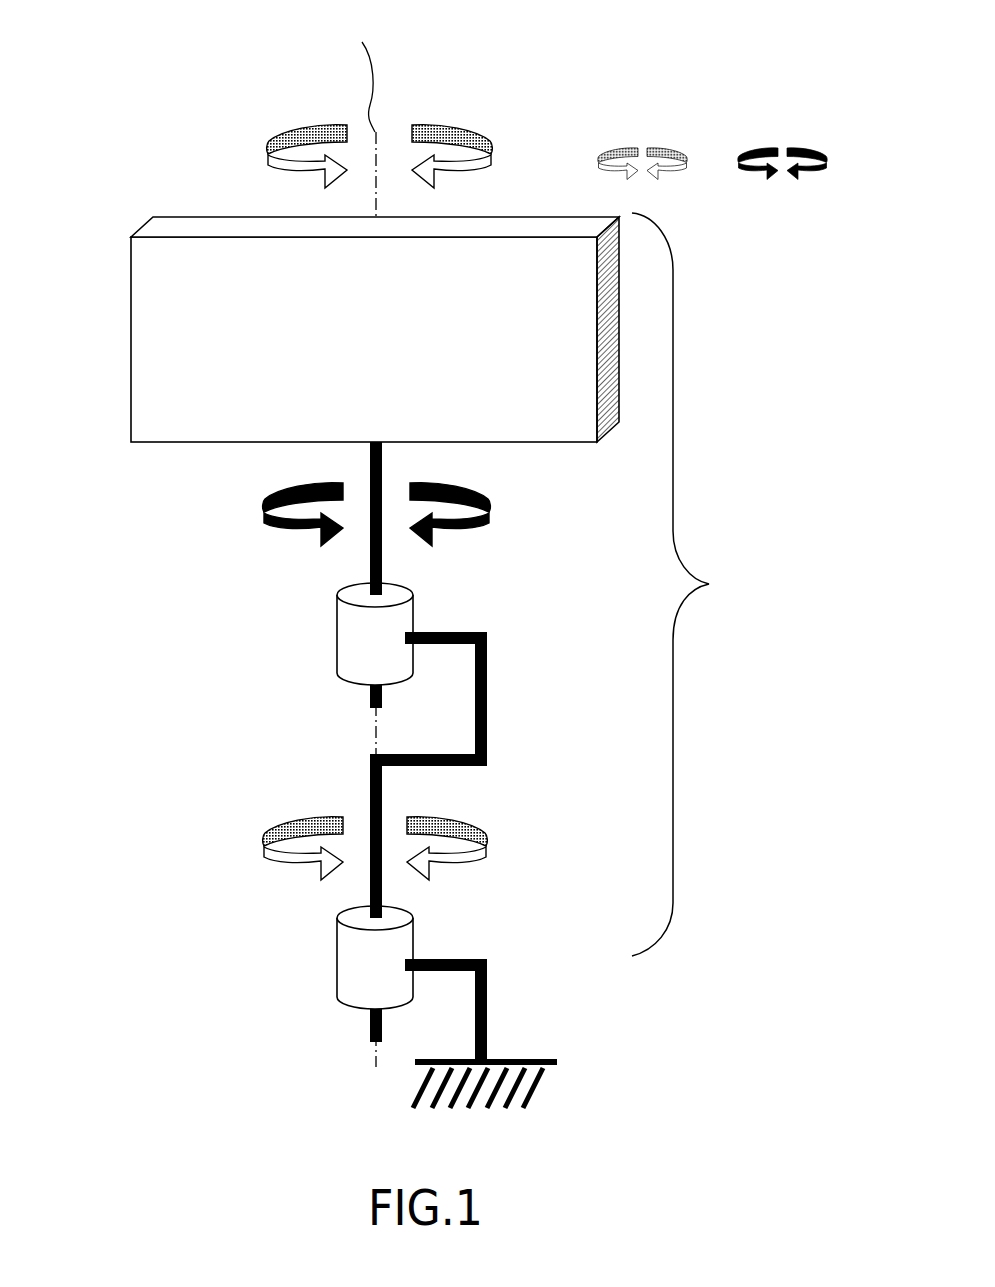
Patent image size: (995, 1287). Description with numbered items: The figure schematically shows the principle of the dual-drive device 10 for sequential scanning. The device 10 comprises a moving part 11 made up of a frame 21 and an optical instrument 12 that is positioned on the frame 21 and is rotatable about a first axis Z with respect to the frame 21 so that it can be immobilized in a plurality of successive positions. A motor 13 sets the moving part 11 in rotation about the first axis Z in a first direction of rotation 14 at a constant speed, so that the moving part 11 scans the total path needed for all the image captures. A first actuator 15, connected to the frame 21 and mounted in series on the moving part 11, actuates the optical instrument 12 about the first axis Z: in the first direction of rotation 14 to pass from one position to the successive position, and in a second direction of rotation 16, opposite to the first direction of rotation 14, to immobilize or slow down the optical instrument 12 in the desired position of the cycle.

The dual-drive device 10 is at (113, 93).
The moving part 11 is at (709, 584).
The optical instrument 12 is at (140, 293).
The motor 13 is at (316, 948).
The first direction of rotation 14 is at (263, 508).
The first actuator 15 is at (314, 606).
The second direction of rotation 16 is at (485, 503).
The frame 21 is at (487, 695).